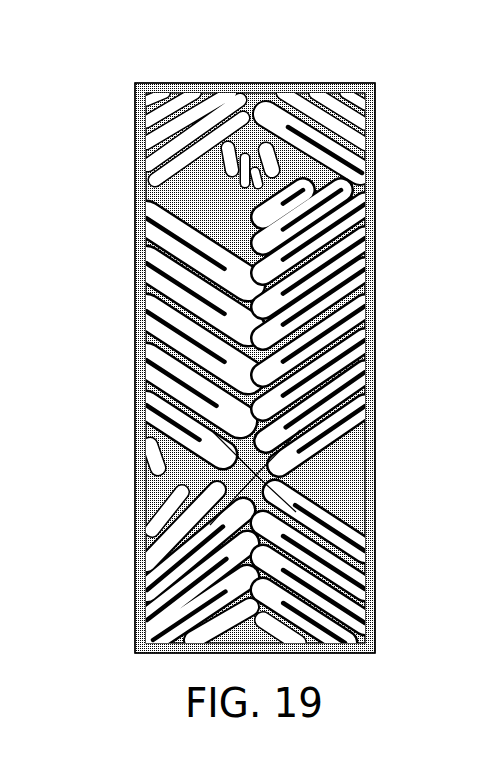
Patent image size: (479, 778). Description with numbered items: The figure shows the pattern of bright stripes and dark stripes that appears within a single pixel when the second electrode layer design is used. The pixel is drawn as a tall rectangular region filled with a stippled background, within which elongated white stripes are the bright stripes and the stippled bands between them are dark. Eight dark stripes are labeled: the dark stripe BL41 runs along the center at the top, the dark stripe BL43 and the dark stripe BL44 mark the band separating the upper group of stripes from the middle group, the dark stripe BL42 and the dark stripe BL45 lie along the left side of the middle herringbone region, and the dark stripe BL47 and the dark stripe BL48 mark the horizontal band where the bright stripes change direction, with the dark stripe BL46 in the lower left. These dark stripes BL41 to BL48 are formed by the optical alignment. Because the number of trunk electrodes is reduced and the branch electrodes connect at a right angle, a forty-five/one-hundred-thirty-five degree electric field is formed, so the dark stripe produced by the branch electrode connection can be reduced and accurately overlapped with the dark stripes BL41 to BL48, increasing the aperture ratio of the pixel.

The dark stripe BL41 is at (258, 110).
The dark stripe BL42 is at (245, 230).
The dark stripe BL43 is at (200, 167).
The dark stripe BL44 is at (362, 183).
The dark stripe BL45 is at (215, 363).
The dark stripe BL46 is at (195, 553).
The dark stripe BL47 is at (150, 478).
The dark stripe BL48 is at (356, 479).